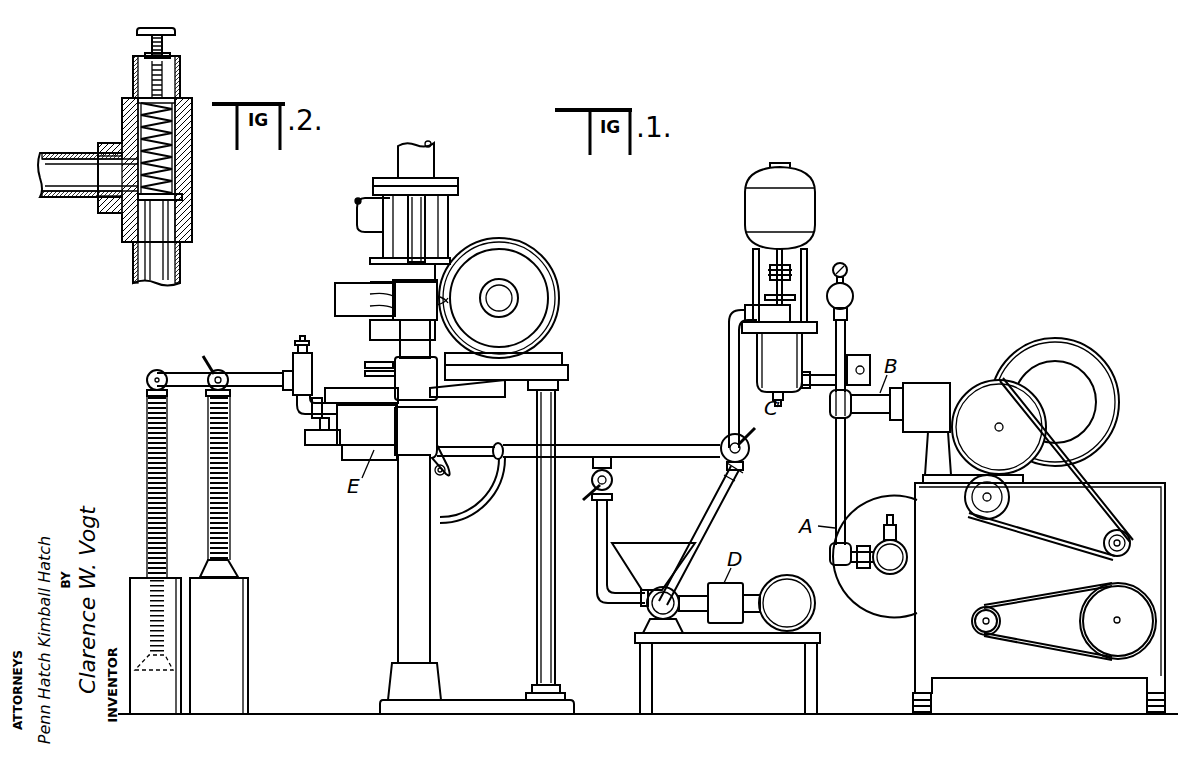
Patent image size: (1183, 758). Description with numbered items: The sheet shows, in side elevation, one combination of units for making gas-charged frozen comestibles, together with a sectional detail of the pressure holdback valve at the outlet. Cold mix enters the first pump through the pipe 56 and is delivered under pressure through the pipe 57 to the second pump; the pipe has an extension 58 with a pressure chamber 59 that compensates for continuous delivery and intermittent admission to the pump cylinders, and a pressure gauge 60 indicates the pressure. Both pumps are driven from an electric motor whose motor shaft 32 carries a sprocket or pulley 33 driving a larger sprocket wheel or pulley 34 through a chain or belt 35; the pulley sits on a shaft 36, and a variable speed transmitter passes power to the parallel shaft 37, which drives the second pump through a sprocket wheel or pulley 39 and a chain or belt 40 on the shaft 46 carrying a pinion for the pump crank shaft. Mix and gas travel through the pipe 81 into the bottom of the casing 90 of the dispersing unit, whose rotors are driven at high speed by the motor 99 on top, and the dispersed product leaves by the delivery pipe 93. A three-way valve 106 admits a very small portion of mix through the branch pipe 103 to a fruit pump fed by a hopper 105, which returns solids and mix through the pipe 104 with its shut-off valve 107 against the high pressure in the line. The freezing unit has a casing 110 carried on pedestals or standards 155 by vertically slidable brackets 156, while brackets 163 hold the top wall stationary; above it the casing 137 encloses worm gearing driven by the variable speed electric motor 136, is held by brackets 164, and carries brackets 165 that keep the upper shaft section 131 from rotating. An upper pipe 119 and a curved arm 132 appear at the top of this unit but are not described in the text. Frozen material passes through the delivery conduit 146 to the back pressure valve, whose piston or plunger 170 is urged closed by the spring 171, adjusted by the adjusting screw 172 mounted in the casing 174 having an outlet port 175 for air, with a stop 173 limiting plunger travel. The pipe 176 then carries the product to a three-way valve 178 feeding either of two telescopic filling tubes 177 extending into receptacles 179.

In FIG. 1, the supply pipe 119 is at (434, 152).
In FIG. 1, the upper shaft section 131 is at (440, 208).
In FIG. 1, the outlet arm 132 is at (356, 220).
In FIG. 1, the brackets 165 is at (420, 232).
In FIG. 1, the variable speed electric motor 136 is at (545, 287).
In FIG. 1, the casing 137 is at (335, 298).
In FIG. 1, the brackets 164 is at (418, 322).
In FIG. 1, the brackets 163 is at (418, 390).
In FIG. 1, the brackets 156 is at (405, 437).
In FIG. 1, the pedestals or standards 155 is at (398, 533).
In FIG. 1, the casing 110 is at (480, 424).
In FIG. 1, the delivery pipe 93 is at (652, 445).
In FIG. 1, the three-way valve 106 is at (749, 457).
In FIG. 1, the shut-off valve 107 is at (612, 480).
In FIG. 1, the pipe 104 is at (607, 508).
In FIG. 1, the hopper 105 is at (662, 548).
In FIG. 1, the branch pipe 103 is at (728, 485).
In FIG. 1, the motor 99 is at (745, 220).
In FIG. 1, the casing 90 is at (779, 320).
In FIG. 1, the pipe 81 is at (822, 390).
In FIG. 1, the extension 58 is at (848, 330).
In FIG. 1, the pressure chamber 59 is at (854, 297).
In FIG. 1, the pressure gauge 60 is at (842, 262).
In FIG. 1, the pipe 57 is at (836, 445).
In FIG. 1, the pipe 56 is at (890, 515).
In FIG. 1, the shaft 46 is at (999, 424).
In FIG. 1, the sprocket wheel or pulley 39 is at (999, 427).
In FIG. 1, the chain or belt 40 is at (1048, 523).
In FIG. 1, the shaft 37 is at (1108, 535).
In FIG. 1, the motor shaft 32 is at (983, 613).
In FIG. 1, the sprocket or pulley 33 is at (998, 620).
In FIG. 1, the sprocket wheel or pulley 34 is at (1083, 625).
In FIG. 1, the shaft 36 is at (1117, 623).
In FIG. 1, the chain or belt 35 is at (1040, 652).
In FIG. 2, the pipe 176 is at (78, 206).
In FIG. 1, the pipe 176 is at (244, 372).
In FIG. 1, the three-way valve 178 is at (206, 366).
In FIG. 1, the filling tubes 177 is at (148, 466).
In FIG. 1, the receptacles 179 is at (208, 728).
In FIG. 2, the casing 174 is at (180, 72).
In FIG. 1, the casing 174 is at (312, 360).
In FIG. 2, the adjusting screw 172 is at (175, 31).
In FIG. 1, the adjusting screw 172 is at (300, 341).
In FIG. 2, the delivery conduit 146 is at (180, 262).
In FIG. 1, the delivery conduit 146 is at (297, 412).
In FIG. 2, the outlet port 175 is at (180, 58).
In FIG. 2, the spring 171 is at (180, 137).
In FIG. 2, the piston or plunger 170 is at (180, 168).
In FIG. 2, the stop 173 is at (170, 198).